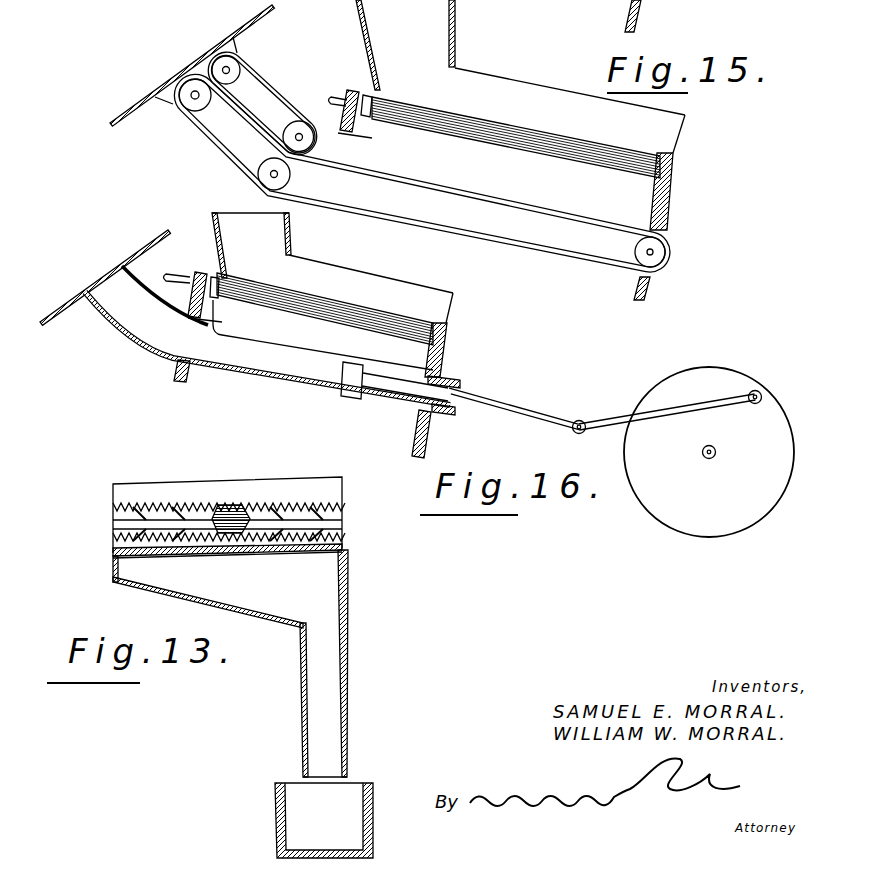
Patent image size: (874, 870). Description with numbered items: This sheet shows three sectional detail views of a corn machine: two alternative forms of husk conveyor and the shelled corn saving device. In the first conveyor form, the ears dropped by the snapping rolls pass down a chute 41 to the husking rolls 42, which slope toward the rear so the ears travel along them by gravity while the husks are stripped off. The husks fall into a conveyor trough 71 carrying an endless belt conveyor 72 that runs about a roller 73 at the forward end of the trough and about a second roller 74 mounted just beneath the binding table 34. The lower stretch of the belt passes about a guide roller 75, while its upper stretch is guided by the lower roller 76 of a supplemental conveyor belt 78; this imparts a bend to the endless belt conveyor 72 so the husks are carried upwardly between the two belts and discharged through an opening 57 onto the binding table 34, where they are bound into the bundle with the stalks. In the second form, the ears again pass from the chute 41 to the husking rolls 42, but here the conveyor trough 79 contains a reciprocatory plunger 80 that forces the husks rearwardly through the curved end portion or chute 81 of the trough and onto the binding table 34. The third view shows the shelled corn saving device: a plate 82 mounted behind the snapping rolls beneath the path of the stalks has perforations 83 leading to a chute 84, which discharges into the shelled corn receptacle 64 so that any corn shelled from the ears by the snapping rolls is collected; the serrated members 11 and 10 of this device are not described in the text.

In FIG. 15, the binding table 34 is at (141, 100).
In FIG. 16, the binding table 34 is at (67, 303).
In FIG. 15, the opening 57 is at (199, 62).
In FIG. 16, the opening 57 is at (100, 278).
In FIG. 15, the second roller 74 is at (183, 107).
In FIG. 15, the supplemental conveyor belt 78 is at (278, 100).
In FIG. 15, the lower roller 76 is at (320, 147).
In FIG. 15, the guide roller 75 is at (288, 180).
In FIG. 15, the endless belt conveyor 72 is at (537, 209).
In FIG. 15, the roller 73 is at (665, 252).
In FIG. 15, the conveyor trough 71 is at (667, 213).
In FIG. 15, the chute 41 is at (457, 33).
In FIG. 16, the chute 41 is at (228, 223).
In FIG. 15, the husking rolls 42 is at (507, 128).
In FIG. 16, the husking rolls 42 is at (335, 305).
In FIG. 16, the conveyor trough 79 is at (443, 358).
In FIG. 16, the reciprocatory plunger 80 is at (347, 392).
In FIG. 16, the curved end portion or chute 81 is at (142, 347).
In FIG. 13, the upper serrated plate 11 is at (333, 512).
In FIG. 13, the lower serrated plate 10 is at (333, 528).
In FIG. 13, the plate 82 is at (315, 553).
In FIG. 13, the perforations 83 is at (247, 555).
In FIG. 13, the chute 84 is at (348, 615).
In FIG. 13, the receptacle 64 is at (347, 793).